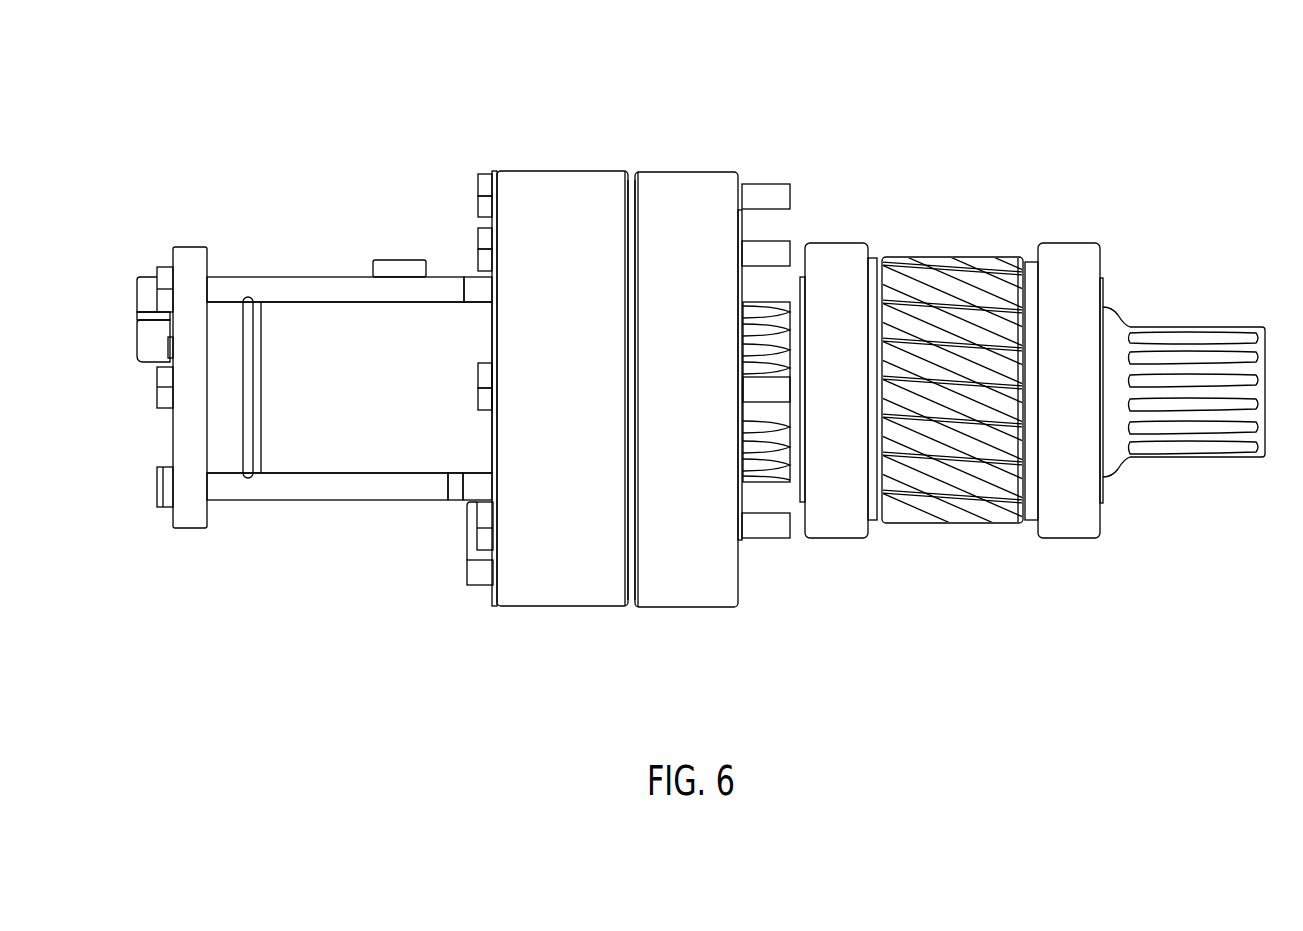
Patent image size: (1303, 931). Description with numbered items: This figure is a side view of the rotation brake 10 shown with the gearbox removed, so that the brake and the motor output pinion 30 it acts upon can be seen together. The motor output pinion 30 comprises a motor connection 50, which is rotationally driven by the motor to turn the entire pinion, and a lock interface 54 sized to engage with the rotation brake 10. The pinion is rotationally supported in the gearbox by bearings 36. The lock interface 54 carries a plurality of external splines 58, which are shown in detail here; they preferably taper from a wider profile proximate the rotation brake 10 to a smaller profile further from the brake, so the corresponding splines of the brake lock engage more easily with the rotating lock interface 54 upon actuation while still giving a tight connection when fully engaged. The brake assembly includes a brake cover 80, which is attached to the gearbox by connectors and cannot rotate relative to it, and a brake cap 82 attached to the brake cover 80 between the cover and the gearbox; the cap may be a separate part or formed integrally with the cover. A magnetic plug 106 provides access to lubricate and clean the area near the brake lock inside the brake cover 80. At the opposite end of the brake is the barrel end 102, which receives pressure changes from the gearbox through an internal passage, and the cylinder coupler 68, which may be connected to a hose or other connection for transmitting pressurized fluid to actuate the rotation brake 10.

The rotation brake 10 is at (393, 133).
The motor output pinion 30 is at (950, 525).
The bearings 36 is at (837, 243).
The motor connection 50 is at (1190, 325).
The lock interface 54 is at (793, 482).
The external splines 58 is at (748, 483).
The cylinder coupler 68 is at (398, 260).
The brake cover 80 is at (563, 170).
The brake cap 82 is at (698, 172).
The barrel end 102 is at (187, 505).
The magnetic plug 106 is at (465, 562).